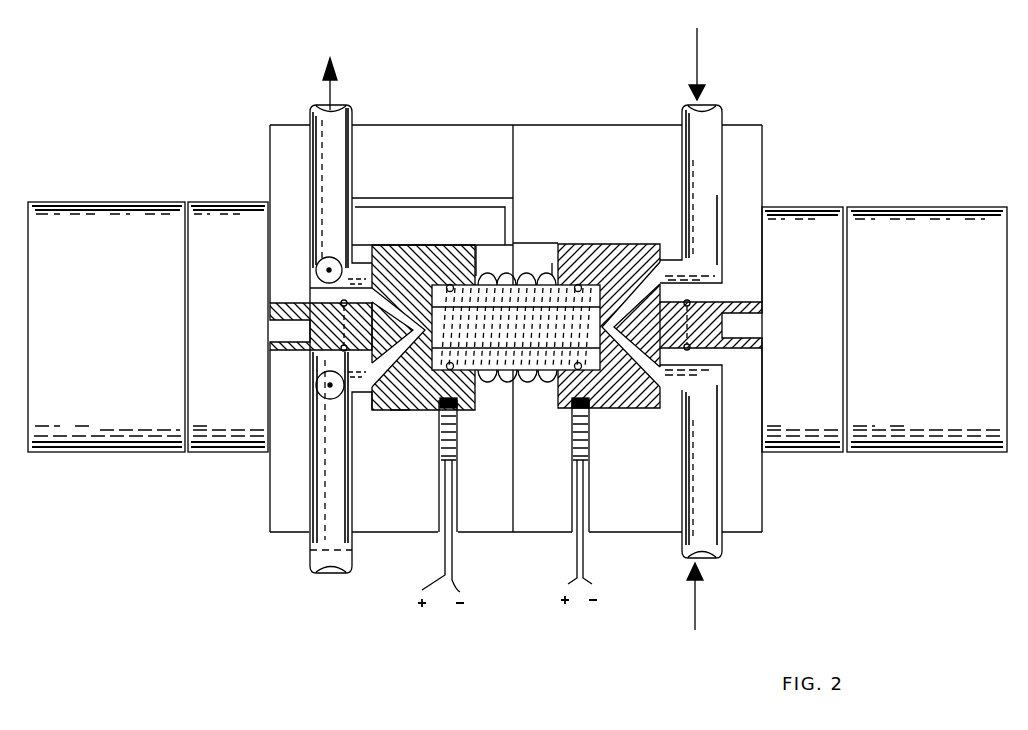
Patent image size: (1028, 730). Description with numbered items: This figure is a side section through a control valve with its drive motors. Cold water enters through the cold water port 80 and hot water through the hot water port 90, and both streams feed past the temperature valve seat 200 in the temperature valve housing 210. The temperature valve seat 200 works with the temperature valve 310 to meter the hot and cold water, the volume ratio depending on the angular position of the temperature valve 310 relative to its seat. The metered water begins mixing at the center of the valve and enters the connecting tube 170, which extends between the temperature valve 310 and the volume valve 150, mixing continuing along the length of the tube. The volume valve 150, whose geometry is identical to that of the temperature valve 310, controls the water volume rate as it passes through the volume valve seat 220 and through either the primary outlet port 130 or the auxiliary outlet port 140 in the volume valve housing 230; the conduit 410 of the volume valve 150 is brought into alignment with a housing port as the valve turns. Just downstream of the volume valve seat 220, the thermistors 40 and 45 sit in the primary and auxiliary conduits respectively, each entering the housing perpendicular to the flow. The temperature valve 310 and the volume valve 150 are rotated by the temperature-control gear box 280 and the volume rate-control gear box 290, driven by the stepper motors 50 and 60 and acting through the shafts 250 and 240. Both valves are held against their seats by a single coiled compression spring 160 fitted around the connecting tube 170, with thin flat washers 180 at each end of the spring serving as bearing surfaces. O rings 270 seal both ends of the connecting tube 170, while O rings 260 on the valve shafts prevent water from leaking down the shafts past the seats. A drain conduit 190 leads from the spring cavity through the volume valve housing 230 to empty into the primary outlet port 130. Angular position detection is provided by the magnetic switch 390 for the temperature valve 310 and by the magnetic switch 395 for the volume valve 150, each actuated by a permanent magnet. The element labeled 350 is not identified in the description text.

The thermistor 40 is at (321, 262).
The thermistor 45 is at (316, 385).
The stepper motor 50 is at (909, 452).
The stepper motor 60 is at (105, 452).
The cold water port 80 is at (764, 148).
The hot water port 90 is at (759, 501).
The primary water outlet port 130 is at (402, 168).
The auxiliary outlet port 140 is at (333, 573).
The volume valve 150 is at (439, 404).
The coiled compression spring 160 is at (528, 272).
The connecting tube 170 is at (577, 284).
The thin flat washers 180 is at (478, 390).
The drain conduit 190 is at (457, 198).
The temperature valve seat 200 is at (638, 244).
The temperature valve housing 210 is at (614, 533).
The volume valve seat 220 is at (372, 402).
The volume valve housing 230 is at (415, 533).
The shaft 240 is at (282, 330).
The shaft 250 is at (752, 322).
The O rings 260 is at (308, 290).
The O rings 270 is at (450, 284).
The temperature-control gear box 280 is at (791, 452).
The volume rate-control gear box 290 is at (248, 452).
The temperature valve 310 is at (590, 406).
The valve seat 350 is at (398, 409).
The magnetic switch 390 is at (572, 447).
The magnetic switch 395 is at (458, 447).
The conduit 410 is at (395, 279).